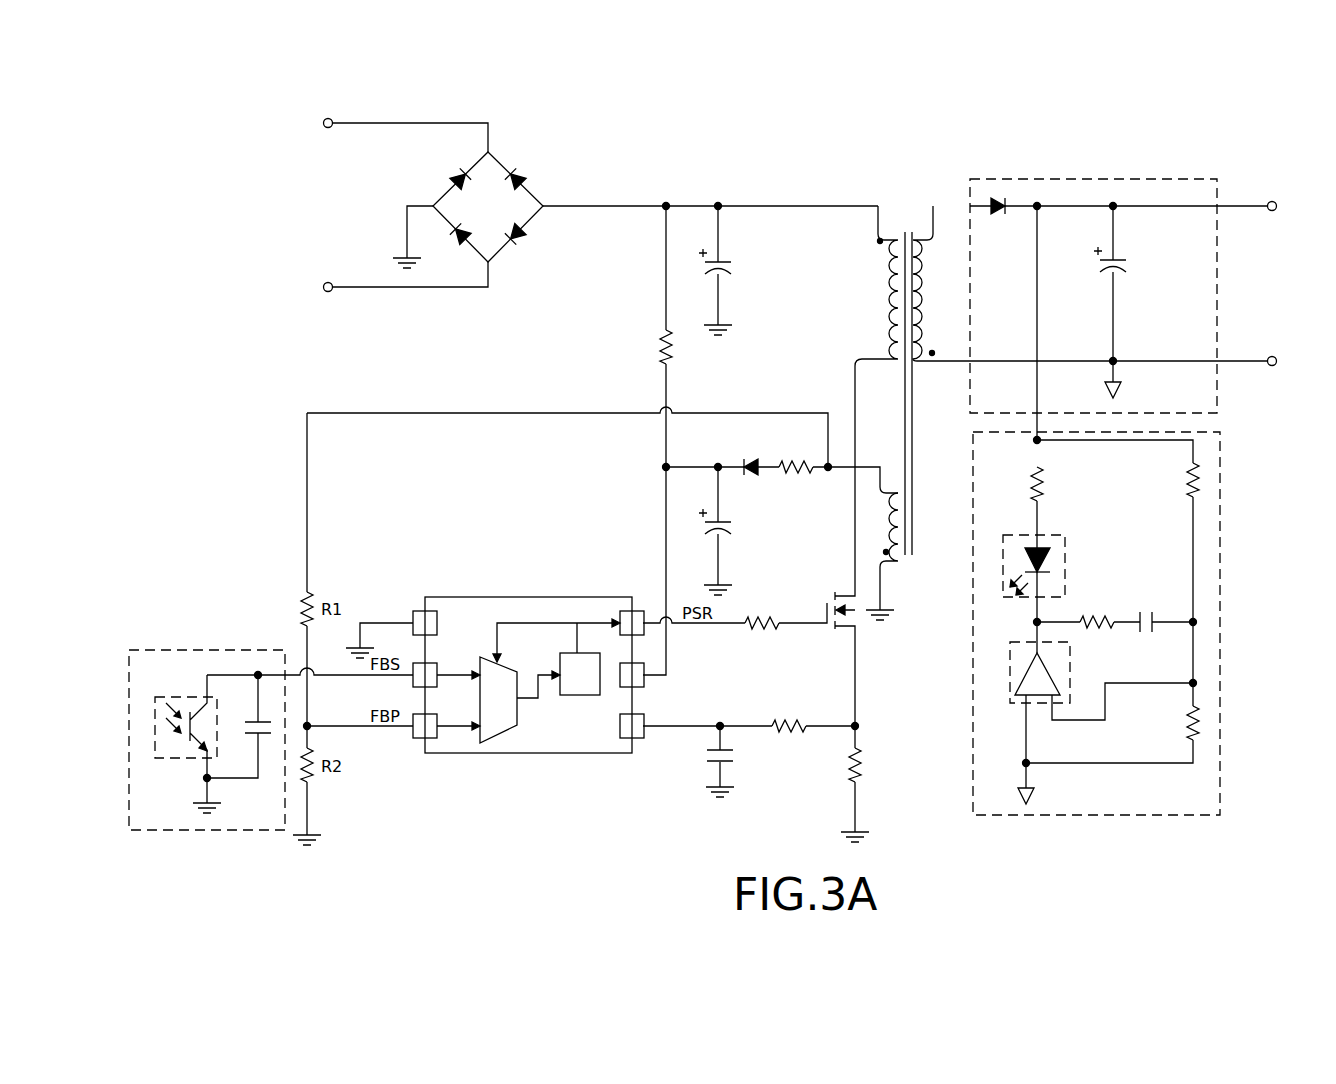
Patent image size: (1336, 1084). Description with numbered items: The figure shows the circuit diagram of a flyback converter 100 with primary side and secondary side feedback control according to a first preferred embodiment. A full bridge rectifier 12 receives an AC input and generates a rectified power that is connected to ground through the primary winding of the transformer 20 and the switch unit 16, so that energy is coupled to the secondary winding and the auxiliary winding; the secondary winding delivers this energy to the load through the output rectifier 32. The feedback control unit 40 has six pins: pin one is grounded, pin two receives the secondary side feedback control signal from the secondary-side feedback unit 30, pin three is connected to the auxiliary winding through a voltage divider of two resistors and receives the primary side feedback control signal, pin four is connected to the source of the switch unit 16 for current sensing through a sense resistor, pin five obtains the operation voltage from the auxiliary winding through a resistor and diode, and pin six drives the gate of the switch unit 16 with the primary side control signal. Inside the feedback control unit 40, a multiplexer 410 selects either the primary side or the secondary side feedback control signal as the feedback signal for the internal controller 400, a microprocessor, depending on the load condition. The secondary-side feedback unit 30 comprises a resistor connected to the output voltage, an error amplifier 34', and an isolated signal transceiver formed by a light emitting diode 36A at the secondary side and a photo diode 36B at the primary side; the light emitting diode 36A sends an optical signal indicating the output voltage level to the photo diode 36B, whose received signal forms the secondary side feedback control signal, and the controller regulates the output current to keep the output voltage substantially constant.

The flyback converter 100 is at (746, 84).
The full bridge rectifier 12 is at (510, 157).
The transformer 20 is at (903, 213).
The output rectifier 32 is at (1093, 185).
The secondary-side feedback unit 30 is at (730, 552).
The light emitting diode 36A is at (1057, 532).
The photo diode 36B is at (187, 693).
The error amplifier 34' is at (1023, 702).
The switch unit 16 is at (827, 605).
The feedback control unit 40 is at (495, 665).
The internal controller 400 is at (590, 690).
The multiplexer 410 is at (500, 720).